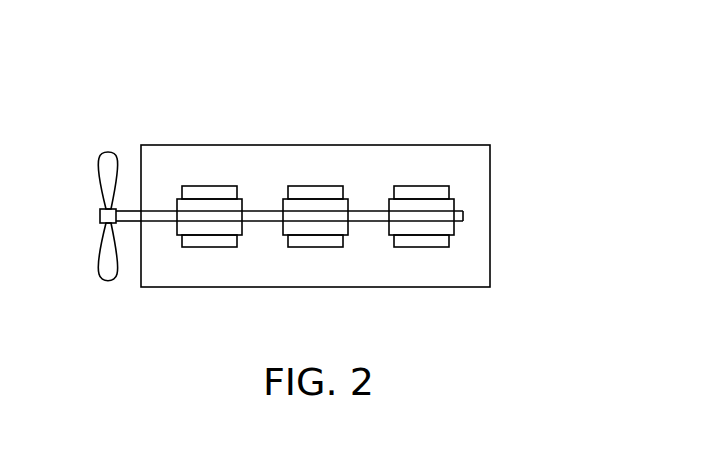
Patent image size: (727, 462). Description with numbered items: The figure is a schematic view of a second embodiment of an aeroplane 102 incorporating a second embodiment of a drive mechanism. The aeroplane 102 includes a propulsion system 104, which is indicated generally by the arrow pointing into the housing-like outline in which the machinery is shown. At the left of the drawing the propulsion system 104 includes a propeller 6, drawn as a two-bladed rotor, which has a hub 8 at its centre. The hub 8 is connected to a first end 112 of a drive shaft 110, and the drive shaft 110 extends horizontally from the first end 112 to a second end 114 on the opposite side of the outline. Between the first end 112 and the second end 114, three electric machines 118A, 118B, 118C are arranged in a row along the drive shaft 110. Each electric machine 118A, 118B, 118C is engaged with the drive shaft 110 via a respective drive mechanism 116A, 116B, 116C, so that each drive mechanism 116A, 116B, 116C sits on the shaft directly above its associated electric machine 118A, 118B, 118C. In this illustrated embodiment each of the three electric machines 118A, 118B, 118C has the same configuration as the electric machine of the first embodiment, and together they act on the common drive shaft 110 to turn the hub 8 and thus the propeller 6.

The propeller 6 is at (90, 258).
The hub 8 is at (100, 215).
The aeroplane 102 is at (388, 145).
The propulsion system 104 is at (289, 166).
The drive shaft 110 is at (370, 217).
The first end 112 is at (127, 223).
The second end 114 is at (463, 217).
The drive mechanism 116A is at (205, 207).
The drive mechanism 116B is at (320, 207).
The drive mechanism 116C is at (427, 207).
The electric machine 118A is at (215, 240).
The electric machine 118B is at (322, 240).
The electric machine 118C is at (430, 240).